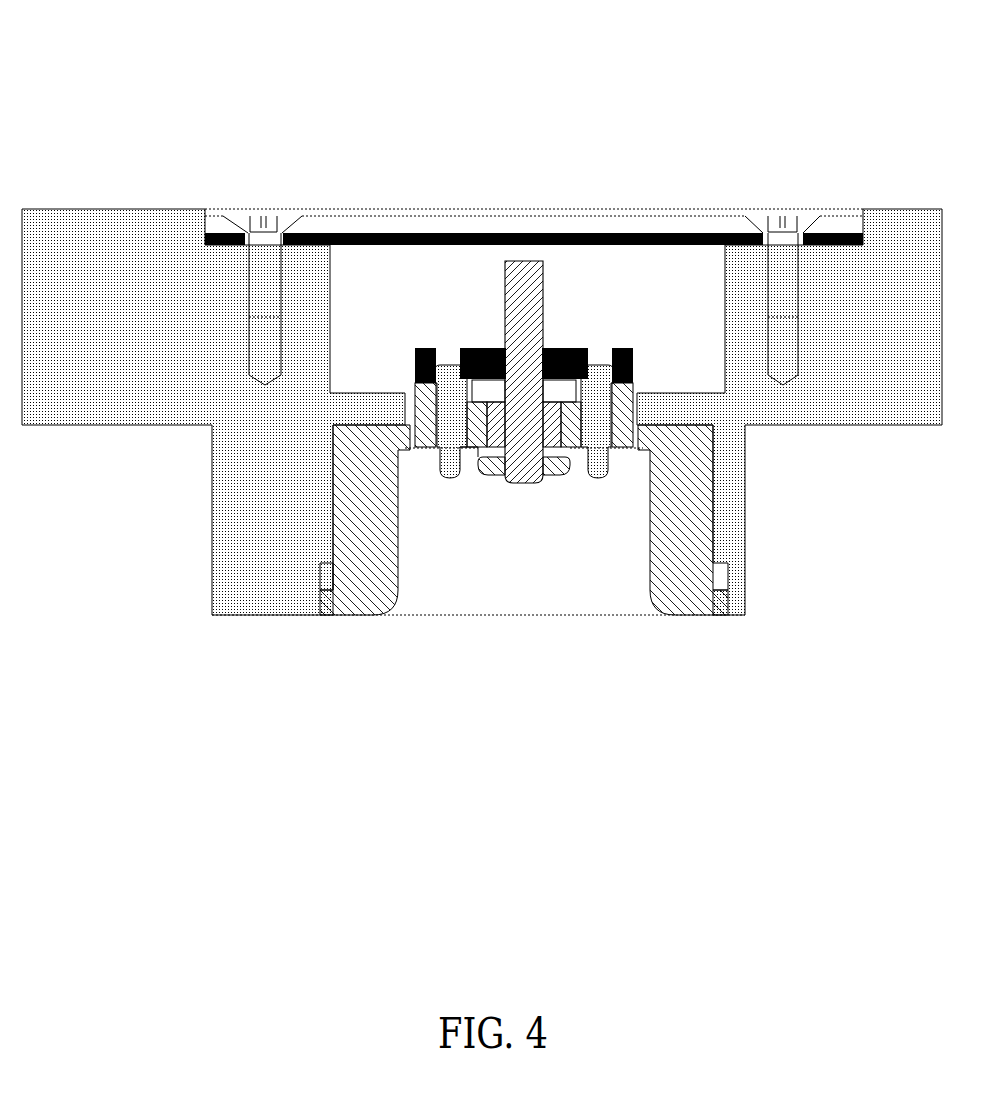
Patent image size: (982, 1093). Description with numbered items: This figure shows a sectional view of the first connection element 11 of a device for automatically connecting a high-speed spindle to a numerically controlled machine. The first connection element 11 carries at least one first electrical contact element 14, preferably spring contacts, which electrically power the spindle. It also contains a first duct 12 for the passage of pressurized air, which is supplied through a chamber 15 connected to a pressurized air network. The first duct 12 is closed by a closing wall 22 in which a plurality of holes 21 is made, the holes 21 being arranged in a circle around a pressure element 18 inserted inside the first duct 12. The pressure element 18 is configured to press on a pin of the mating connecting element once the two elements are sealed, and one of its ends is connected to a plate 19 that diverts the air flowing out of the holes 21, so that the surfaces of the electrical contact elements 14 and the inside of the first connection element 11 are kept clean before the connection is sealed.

The first connection element 11 is at (304, 157).
The first duct 12 is at (542, 440).
The first electrical contact element 14 is at (449, 436).
The chamber 15 is at (617, 260).
The pressure element 18 is at (521, 342).
The plate 19 is at (496, 465).
The holes 21 is at (568, 450).
The closing wall 22 is at (468, 455).